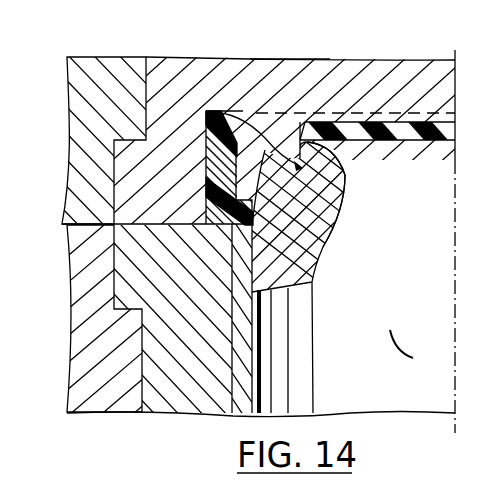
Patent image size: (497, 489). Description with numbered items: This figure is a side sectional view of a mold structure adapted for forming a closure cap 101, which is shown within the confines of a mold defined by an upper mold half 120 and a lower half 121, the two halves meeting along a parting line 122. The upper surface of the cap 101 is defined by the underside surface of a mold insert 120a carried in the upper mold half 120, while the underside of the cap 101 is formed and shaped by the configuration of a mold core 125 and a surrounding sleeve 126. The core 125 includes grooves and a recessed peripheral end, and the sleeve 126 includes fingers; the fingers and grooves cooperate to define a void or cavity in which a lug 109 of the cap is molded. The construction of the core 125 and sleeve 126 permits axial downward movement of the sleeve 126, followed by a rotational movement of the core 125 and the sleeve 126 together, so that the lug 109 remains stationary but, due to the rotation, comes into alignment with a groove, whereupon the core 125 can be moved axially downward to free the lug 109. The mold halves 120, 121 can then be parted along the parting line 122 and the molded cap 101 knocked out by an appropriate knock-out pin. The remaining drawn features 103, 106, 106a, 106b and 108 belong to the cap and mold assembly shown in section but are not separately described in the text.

The closure cap 101 is at (359, 113).
The reinforcing band 103 is at (404, 141).
The seal ring 106 is at (313, 200).
The seal lip 106a is at (333, 183).
The seal lip 106b is at (315, 233).
The sealing ring 108 is at (222, 150).
The lug 109 is at (288, 290).
The upper mold half 120 is at (60, 101).
The mold insert 120a is at (300, 73).
The lower mold half 121 is at (65, 326).
The parting line 122 is at (93, 226).
The mold core 125 is at (300, 318).
The sleeve 126 is at (233, 416).